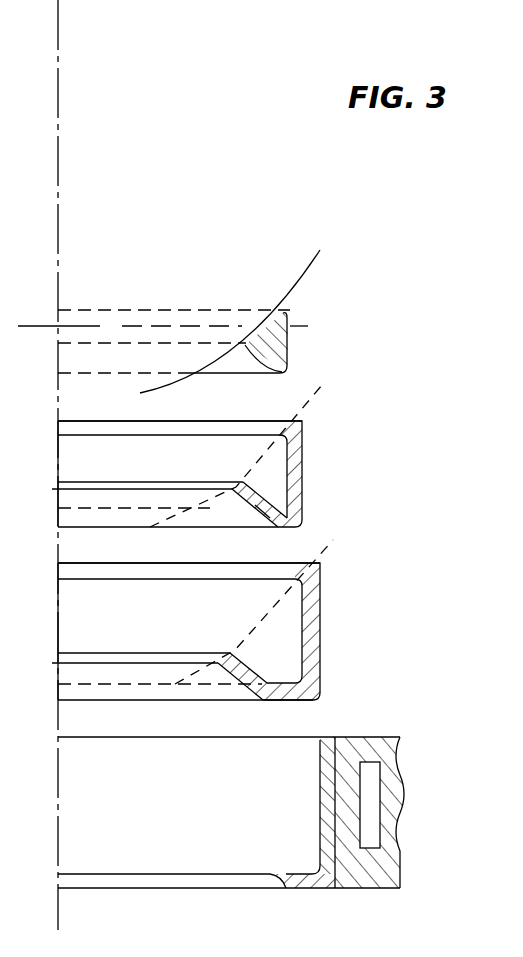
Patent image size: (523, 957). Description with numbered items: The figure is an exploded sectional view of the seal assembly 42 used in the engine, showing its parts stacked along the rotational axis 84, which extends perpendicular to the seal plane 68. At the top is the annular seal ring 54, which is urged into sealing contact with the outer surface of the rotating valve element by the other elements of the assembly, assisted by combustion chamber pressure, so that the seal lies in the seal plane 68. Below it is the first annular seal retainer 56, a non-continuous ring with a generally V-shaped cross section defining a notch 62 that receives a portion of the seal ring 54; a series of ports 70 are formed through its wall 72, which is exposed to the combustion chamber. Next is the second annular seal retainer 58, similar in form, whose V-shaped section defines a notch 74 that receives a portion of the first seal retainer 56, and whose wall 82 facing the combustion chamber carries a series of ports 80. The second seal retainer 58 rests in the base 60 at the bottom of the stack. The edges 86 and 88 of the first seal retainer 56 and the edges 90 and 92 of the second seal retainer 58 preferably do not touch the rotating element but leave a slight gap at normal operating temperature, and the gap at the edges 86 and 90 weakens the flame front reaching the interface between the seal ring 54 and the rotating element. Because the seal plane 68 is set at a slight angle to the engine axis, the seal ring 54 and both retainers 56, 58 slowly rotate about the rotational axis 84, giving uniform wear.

The seal assembly 42 is at (142, 250).
The annular seal ring 54 is at (282, 328).
The first annular seal retainer 56 is at (296, 440).
The second annular seal retainer 58 is at (322, 590).
The base 60 is at (298, 884).
The notch 62 is at (273, 462).
The seal plane 68 is at (194, 322).
The ports 70 is at (272, 505).
The wall 72 is at (237, 500).
The notch 74 is at (262, 640).
The ports 80 is at (245, 685).
The wall 82 is at (227, 672).
The rotational axis 84 is at (58, 118).
The edge 86 is at (156, 482).
The edge 88 is at (203, 420).
The edge 90 is at (85, 656).
The edge 92 is at (84, 568).